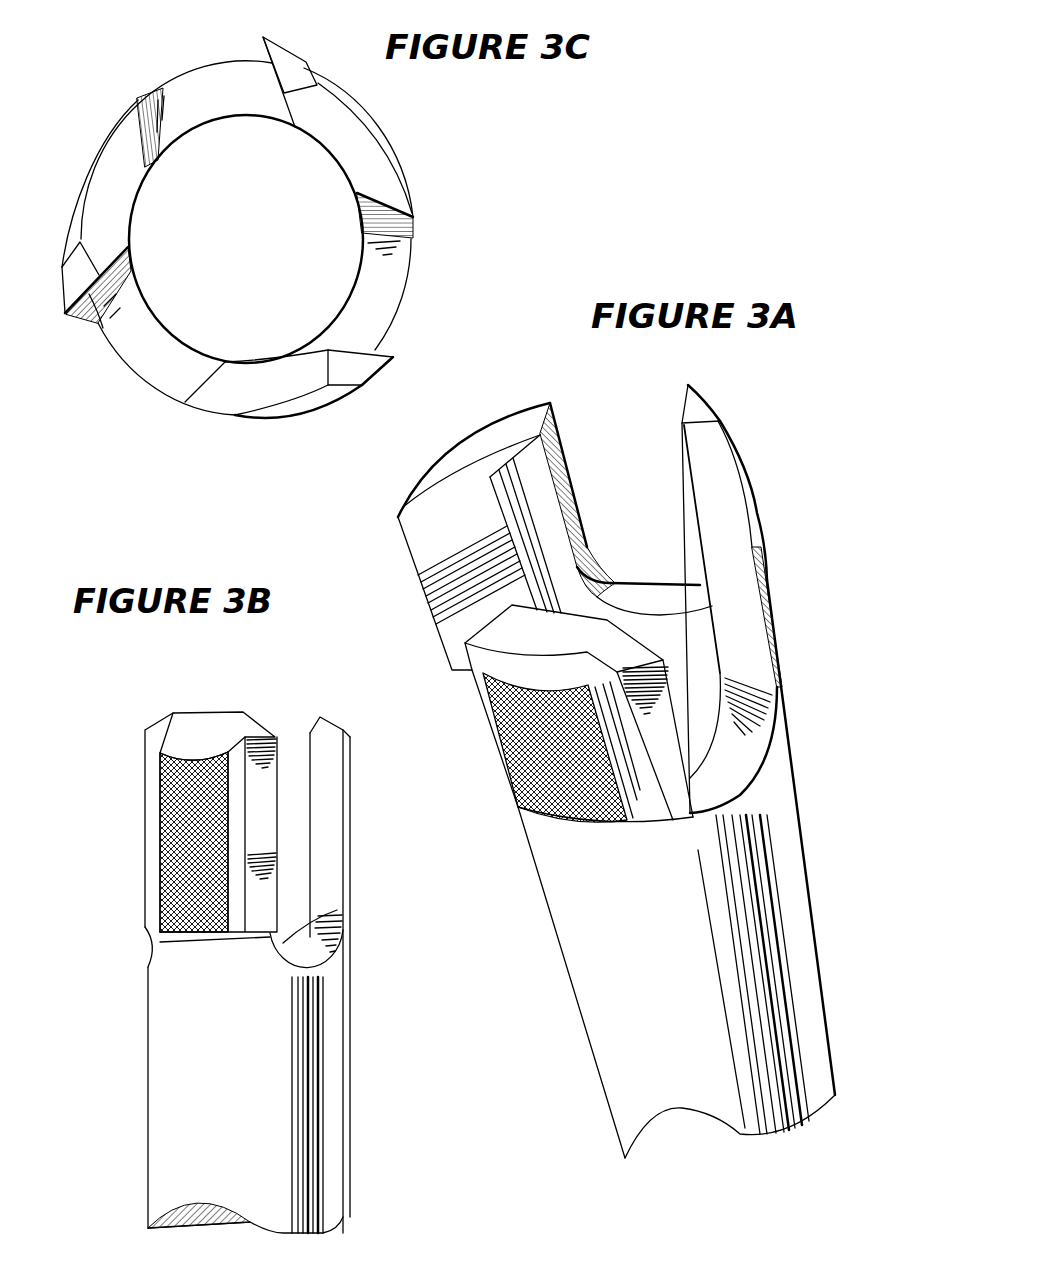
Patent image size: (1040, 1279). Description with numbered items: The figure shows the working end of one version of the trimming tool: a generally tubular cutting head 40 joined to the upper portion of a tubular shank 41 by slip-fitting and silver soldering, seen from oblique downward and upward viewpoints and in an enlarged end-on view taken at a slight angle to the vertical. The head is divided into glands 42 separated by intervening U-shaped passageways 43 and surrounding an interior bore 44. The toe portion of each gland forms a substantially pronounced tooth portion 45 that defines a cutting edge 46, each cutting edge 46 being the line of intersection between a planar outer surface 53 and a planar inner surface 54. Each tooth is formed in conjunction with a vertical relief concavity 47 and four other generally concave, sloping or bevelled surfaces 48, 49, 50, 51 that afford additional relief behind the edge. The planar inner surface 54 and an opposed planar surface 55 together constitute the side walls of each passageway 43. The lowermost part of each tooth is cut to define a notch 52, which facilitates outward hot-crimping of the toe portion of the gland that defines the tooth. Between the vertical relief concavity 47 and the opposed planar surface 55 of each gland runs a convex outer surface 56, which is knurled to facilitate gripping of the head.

In FIG. 3A, the cutting head 40 is at (771, 503).
In FIG. 3C, the tubular shank 41 is at (246, 238).
In FIG. 3A, the tubular shank 41 is at (801, 772).
In FIG. 3B, the tubular shank 41 is at (368, 1085).
In FIG. 3C, the gland 42 is at (237, 227).
In FIG. 3A, the gland 42 is at (747, 480).
In FIG. 3B, the gland 42 is at (373, 863).
In FIG. 3C, the U-shaped passageway 43 is at (183, 63).
In FIG. 3A, the U-shaped passageway 43 is at (642, 430).
In FIG. 3B, the U-shaped passageway 43 is at (300, 879).
In FIG. 3C, the interior bore 44 is at (262, 252).
In FIG. 3A, the interior bore 44 is at (692, 675).
In FIG. 3B, the interior bore 44 is at (337, 910).
In FIG. 3C, the tooth portion 45 is at (300, 45).
In FIG. 3A, the tooth portion 45 is at (691, 388).
In FIG. 3B, the tooth portion 45 is at (256, 703).
In FIG. 3C, the cutting edge 46 is at (263, 38).
In FIG. 3A, the cutting edge 46 is at (455, 592).
In FIG. 3B, the cutting edge 46 is at (280, 763).
In FIG. 3A, the vertical relief concavity 47 is at (632, 800).
In FIG. 3B, the vertical relief concavity 47 is at (235, 863).
In FIG. 3C, the bevelled relief surface 48 is at (348, 373).
In FIG. 3A, the bevelled relief surface 48 is at (700, 410).
In FIG. 3B, the bevelled relief surface 48 is at (157, 720).
In FIG. 3C, the bevelled relief surface 49 is at (303, 121).
In FIG. 3A, the bevelled relief surface 49 is at (493, 455).
In FIG. 3C, the bevelled relief surface 50 is at (255, 383).
In FIG. 3A, the bevelled relief surface 50 is at (493, 430).
In FIG. 3C, the bevelled relief surface 51 is at (345, 101).
In FIG. 3A, the bevelled relief surface 51 is at (530, 672).
In FIG. 3B, the bevelled relief surface 51 is at (213, 737).
In FIG. 3A, the notch 52 is at (458, 680).
In FIG. 3B, the notch 52 is at (150, 940).
In FIG. 3C, the planar outer surface 53 is at (390, 362).
In FIG. 3A, the planar outer surface 53 is at (661, 798).
In FIG. 3B, the planar outer surface 53 is at (267, 827).
In FIG. 3C, the planar inner surface 54 is at (392, 335).
In FIG. 3A, the planar inner surface 54 is at (427, 530).
In FIG. 3B, the planar inner surface 54 is at (150, 777).
In FIG. 3C, the opposed planar surface 55 is at (146, 93).
In FIG. 3A, the opposed planar surface 55 is at (562, 436).
In FIG. 3B, the opposed planar surface 55 is at (327, 762).
In FIG. 3A, the knurled convex outer surface 56 is at (550, 740).
In FIG. 3B, the knurled convex outer surface 56 is at (193, 827).